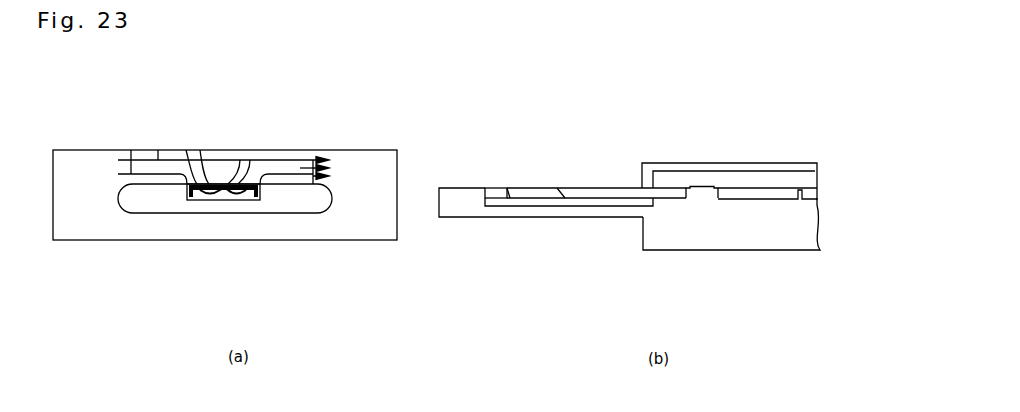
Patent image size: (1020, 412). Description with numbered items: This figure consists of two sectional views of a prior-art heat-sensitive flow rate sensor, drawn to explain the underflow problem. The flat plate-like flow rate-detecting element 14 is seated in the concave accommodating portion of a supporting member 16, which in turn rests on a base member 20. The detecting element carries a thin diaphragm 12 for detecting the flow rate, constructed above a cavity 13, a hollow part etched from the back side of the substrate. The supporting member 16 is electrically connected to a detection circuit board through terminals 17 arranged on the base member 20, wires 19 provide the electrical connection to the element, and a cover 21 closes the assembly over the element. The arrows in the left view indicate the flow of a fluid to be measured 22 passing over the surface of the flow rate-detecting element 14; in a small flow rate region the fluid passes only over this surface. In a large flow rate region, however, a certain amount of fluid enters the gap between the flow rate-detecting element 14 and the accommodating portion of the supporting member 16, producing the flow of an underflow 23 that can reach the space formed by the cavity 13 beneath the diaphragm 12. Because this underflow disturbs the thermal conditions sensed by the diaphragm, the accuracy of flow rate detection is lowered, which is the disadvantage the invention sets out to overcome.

The diaphragm 12 is at (200, 150).
The cavity 13 is at (250, 160).
The flow rate-detecting element 14 is at (186, 150).
The supporting member 16 is at (140, 206).
The terminals 17 is at (798, 195).
The wires 19 is at (704, 187).
The base member 20 is at (358, 162).
The cover 21 is at (298, 152).
The flow of a fluid to be measured 22 is at (158, 150).
The flow of an underflow 23 is at (146, 174).